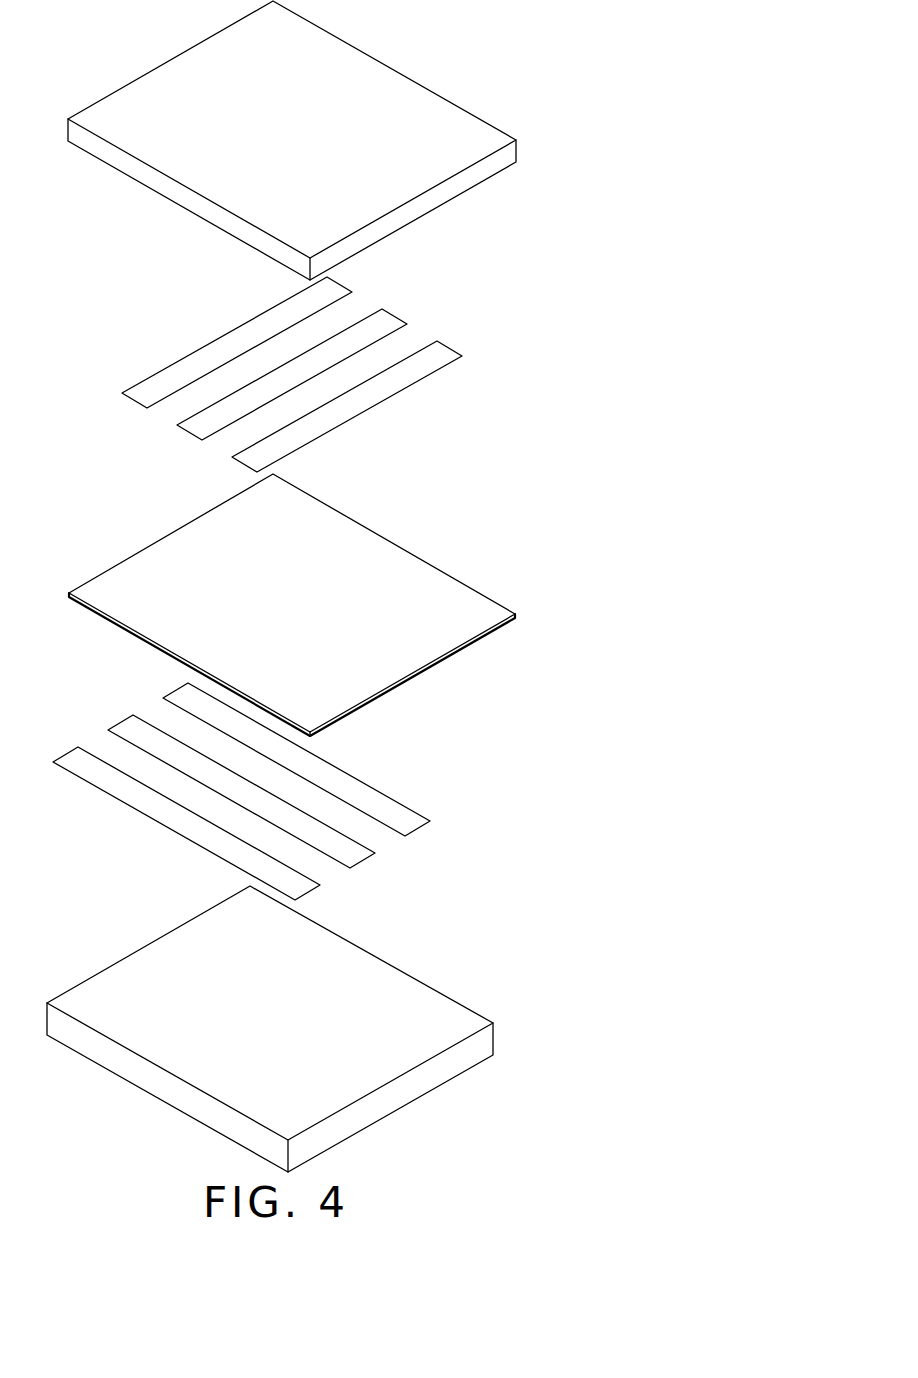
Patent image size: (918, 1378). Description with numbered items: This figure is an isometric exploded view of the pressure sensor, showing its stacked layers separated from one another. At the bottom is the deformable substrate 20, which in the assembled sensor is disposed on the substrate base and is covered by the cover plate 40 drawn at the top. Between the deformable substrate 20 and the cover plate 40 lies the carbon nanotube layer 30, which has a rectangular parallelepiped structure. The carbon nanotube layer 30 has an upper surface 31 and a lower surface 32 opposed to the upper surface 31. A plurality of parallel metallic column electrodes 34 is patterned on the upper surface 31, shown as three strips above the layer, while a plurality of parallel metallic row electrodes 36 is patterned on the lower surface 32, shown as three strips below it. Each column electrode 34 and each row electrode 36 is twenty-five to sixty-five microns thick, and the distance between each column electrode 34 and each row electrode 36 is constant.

The cover plate 40 is at (397, 95).
The parallel metallic column electrodes 34 is at (432, 363).
The carbon nanotube layer 30 is at (325, 605).
The upper surface 31 is at (442, 590).
The lower surface 32 is at (475, 638).
The parallel metallic row electrodes 36 is at (396, 817).
The deformable substrate 20 is at (380, 1008).